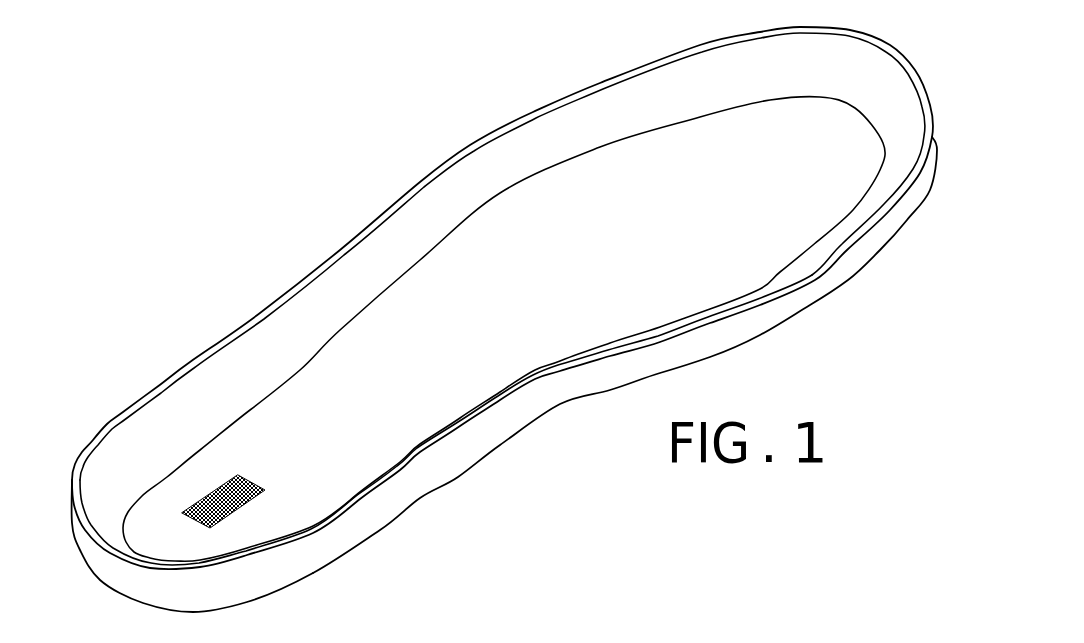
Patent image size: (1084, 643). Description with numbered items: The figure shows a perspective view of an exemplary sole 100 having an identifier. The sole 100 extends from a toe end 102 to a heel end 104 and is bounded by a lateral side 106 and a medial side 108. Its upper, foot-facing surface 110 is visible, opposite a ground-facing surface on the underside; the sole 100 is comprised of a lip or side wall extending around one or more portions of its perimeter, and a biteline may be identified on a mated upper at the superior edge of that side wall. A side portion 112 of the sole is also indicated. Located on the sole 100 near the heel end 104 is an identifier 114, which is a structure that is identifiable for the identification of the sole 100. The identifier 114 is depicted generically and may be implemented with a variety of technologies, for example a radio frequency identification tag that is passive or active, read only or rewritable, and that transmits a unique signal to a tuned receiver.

The sole 100 is at (433, 173).
The toe end 102 is at (909, 58).
The heel end 104 is at (100, 544).
The lateral side 106 is at (317, 267).
The medial side 108 is at (539, 390).
The foot-facing surface 110 is at (693, 177).
The side wall / base 112 is at (458, 477).
The identifier 114 is at (208, 490).